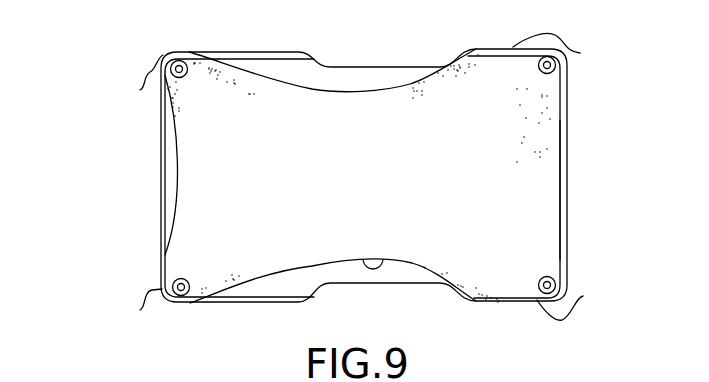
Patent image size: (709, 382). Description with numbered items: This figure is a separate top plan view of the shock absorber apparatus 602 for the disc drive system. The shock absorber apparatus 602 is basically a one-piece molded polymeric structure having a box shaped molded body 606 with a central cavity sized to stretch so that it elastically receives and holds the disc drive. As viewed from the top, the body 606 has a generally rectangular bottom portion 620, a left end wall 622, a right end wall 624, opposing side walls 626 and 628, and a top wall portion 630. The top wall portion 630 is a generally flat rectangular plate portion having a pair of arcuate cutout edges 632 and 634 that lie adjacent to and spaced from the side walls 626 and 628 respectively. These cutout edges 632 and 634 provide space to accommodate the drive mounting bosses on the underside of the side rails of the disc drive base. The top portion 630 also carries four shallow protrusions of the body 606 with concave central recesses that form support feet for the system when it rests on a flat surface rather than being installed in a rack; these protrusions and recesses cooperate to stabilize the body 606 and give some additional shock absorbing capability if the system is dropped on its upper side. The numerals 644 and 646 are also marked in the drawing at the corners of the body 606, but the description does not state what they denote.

The shock absorber apparatus 602 is at (141, 172).
The box shaped molded body 606 is at (568, 128).
The bottom portion 620 is at (308, 77).
The left end wall 622 is at (161, 230).
The right end wall 624 is at (568, 208).
The side wall 626 is at (583, 296).
The side wall 628 is at (580, 53).
The top wall portion 630 is at (451, 187).
The arcuate cutout edge 632 is at (383, 259).
The arcuate cutout edge 634 is at (405, 88).
The corner clip 644 is at (140, 90).
The corner clip 646 is at (140, 310).